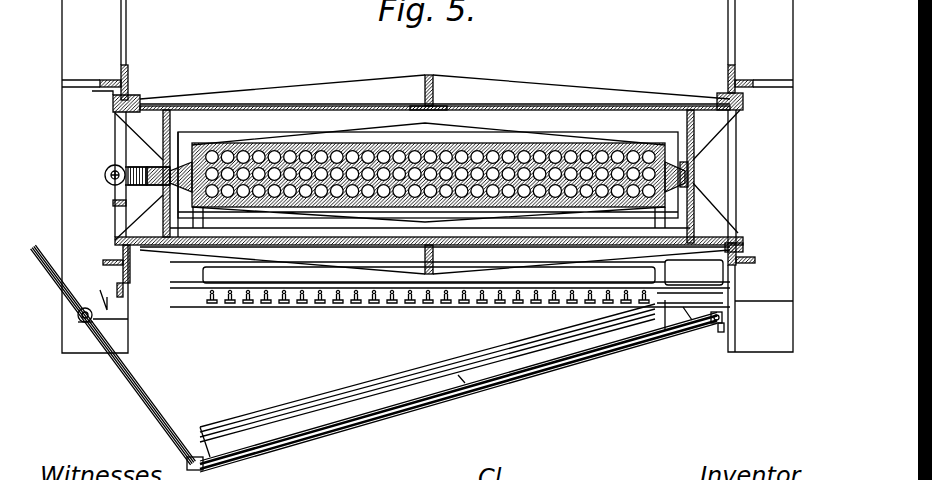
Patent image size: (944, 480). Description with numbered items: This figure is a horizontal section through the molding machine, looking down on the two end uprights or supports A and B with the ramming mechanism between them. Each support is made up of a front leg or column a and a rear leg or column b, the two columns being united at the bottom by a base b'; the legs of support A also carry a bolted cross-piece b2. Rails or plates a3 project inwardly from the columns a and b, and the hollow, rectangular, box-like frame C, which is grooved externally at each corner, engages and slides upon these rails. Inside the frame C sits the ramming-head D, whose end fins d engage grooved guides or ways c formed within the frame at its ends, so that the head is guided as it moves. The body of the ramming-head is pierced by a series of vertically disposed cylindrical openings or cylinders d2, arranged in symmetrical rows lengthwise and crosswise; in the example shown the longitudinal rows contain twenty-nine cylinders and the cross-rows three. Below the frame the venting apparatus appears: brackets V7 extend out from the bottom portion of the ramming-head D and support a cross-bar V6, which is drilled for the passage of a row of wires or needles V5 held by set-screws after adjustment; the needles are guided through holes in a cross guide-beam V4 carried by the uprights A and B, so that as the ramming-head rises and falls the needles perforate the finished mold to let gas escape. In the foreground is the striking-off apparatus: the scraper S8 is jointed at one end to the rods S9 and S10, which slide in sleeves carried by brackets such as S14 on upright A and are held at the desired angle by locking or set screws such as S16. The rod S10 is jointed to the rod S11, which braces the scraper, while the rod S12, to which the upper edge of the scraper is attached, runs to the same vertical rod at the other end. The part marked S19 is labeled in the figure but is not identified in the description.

The upright or support A is at (132, 80).
The upright or support B is at (768, 176).
The rear leg or column b is at (428, 50).
The base b' is at (422, 176).
The cross-piece b2 is at (113, 205).
The front leg or column a is at (733, 278).
The rails or plates a3 is at (745, 248).
The frame C is at (429, 174).
The grooved guides or ways c is at (697, 147).
The ramming-head D is at (388, 207).
The fins d is at (695, 175).
The cylindrical openings or cylinders d2 is at (520, 208).
The cross guide-beam V4 is at (665, 330).
The wires or needles V5 is at (530, 302).
The cross-bar V6 is at (332, 288).
The brackets V7 is at (665, 272).
The scraper S8 is at (385, 387).
The rod S9 is at (720, 333).
The rod S10 is at (750, 317).
The rod S11 is at (403, 404).
The rod S12 is at (80, 336).
The bracket S14 is at (108, 296).
The locking or set screw S16 is at (78, 313).
The end nut S19 is at (199, 468).